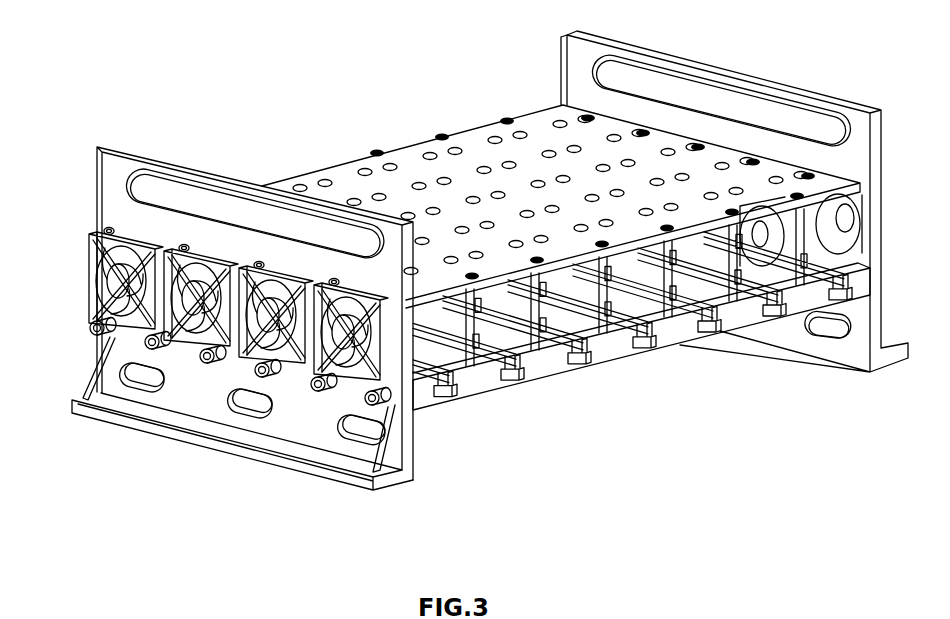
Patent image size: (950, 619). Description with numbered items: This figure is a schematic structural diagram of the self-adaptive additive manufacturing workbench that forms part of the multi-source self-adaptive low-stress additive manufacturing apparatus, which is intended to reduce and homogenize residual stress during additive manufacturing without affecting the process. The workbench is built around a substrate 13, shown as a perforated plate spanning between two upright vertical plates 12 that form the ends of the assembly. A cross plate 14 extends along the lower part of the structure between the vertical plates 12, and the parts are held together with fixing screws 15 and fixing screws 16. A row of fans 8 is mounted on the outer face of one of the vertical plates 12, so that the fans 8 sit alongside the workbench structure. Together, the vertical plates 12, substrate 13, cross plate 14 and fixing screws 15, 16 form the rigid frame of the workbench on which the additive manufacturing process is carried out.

The fan 8 is at (121, 283).
The vertical plate 12 is at (107, 167).
The substrate 13 is at (347, 168).
The cross plate 14 is at (677, 325).
The fixing screw 15 is at (538, 317).
The fixing screw 16 is at (377, 410).